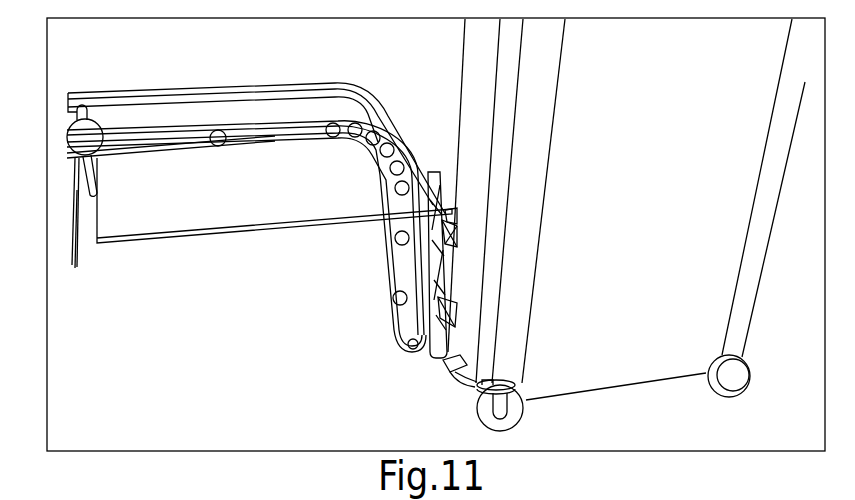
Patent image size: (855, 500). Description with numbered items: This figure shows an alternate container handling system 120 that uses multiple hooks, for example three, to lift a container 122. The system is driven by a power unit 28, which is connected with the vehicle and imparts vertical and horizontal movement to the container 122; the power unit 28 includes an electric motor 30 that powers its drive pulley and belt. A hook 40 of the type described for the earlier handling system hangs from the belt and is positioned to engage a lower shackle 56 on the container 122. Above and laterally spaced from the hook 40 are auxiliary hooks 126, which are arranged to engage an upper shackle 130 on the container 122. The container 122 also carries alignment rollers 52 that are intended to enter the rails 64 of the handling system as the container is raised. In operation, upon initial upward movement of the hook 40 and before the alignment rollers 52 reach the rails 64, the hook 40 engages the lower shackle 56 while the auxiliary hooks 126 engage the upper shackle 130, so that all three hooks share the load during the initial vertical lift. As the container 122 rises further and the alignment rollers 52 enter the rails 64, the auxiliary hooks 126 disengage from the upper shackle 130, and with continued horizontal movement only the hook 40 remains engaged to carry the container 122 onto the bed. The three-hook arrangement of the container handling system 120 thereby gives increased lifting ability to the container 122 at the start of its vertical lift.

The power unit 28 is at (60, 128).
The electric motor 30 is at (100, 124).
The hook 40 is at (413, 352).
The alignment rollers 52 is at (450, 374).
The lower shackle 56 is at (442, 361).
The rails 64 is at (176, 154).
The container handling system 120 is at (293, 72).
The container 122 is at (589, 396).
The auxiliary hooks 126 is at (452, 250).
The upper shackle 130 is at (456, 222).